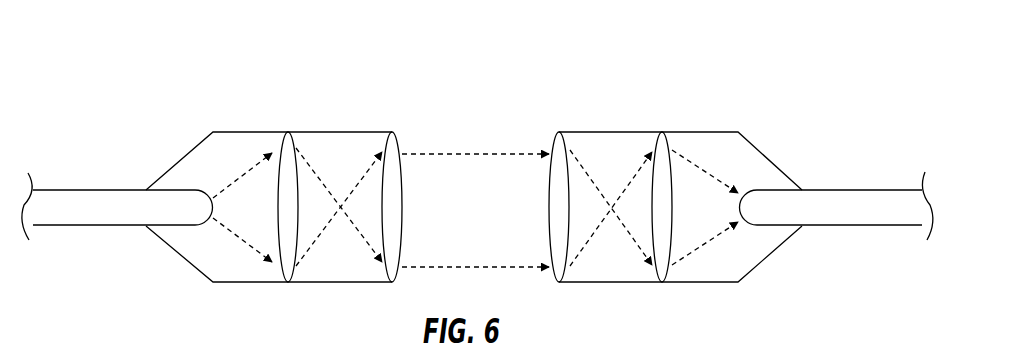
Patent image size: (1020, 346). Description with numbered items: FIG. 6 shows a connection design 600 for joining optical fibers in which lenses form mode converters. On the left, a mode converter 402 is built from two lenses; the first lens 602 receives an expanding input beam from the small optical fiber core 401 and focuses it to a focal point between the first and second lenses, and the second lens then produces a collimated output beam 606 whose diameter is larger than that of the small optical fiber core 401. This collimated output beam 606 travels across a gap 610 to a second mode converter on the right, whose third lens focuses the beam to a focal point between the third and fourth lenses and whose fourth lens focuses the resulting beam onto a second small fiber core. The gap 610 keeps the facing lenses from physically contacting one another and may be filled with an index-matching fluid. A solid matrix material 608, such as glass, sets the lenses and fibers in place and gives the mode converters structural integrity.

The connection design 600 is at (520, 43).
The small optical fiber core 401 is at (102, 222).
The mode converter 402 is at (232, 132).
The first lens 602 is at (290, 140).
The collimated output beam 606 is at (490, 153).
The solid matrix material 608 is at (250, 281).
The gap 610 is at (500, 222).